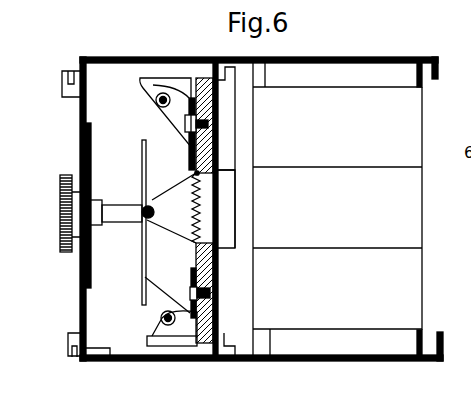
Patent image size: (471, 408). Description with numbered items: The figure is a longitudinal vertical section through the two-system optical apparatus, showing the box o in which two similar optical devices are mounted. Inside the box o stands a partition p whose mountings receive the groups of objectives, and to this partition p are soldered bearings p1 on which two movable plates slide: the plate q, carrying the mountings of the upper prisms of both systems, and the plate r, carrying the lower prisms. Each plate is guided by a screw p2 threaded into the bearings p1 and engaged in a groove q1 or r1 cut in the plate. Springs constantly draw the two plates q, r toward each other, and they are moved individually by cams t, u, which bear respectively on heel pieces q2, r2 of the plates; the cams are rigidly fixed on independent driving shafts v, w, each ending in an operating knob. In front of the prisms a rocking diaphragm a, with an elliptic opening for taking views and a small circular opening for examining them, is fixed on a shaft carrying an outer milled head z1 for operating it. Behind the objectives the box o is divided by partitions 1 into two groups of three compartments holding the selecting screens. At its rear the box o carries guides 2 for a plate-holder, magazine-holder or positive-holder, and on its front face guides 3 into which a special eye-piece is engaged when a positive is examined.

The box o is at (349, 57).
The partitions 1 is at (417, 73).
The guides 2 is at (430, 72).
The guides 3 is at (71, 78).
The partition p is at (218, 92).
The bearings p1 is at (216, 115).
The screw p2 is at (190, 292).
The movable plate r is at (195, 170).
The groove r1 is at (216, 142).
The heel piece r2 is at (149, 78).
The movable plate q is at (213, 270).
The groove q1 is at (213, 282).
The heel piece q2 is at (162, 346).
The cam u is at (156, 100).
The driving shaft w is at (158, 105).
The driving shaft v is at (161, 316).
The cam t is at (156, 328).
The diaphragm a is at (134, 222).
The milled head z1 is at (60, 215).